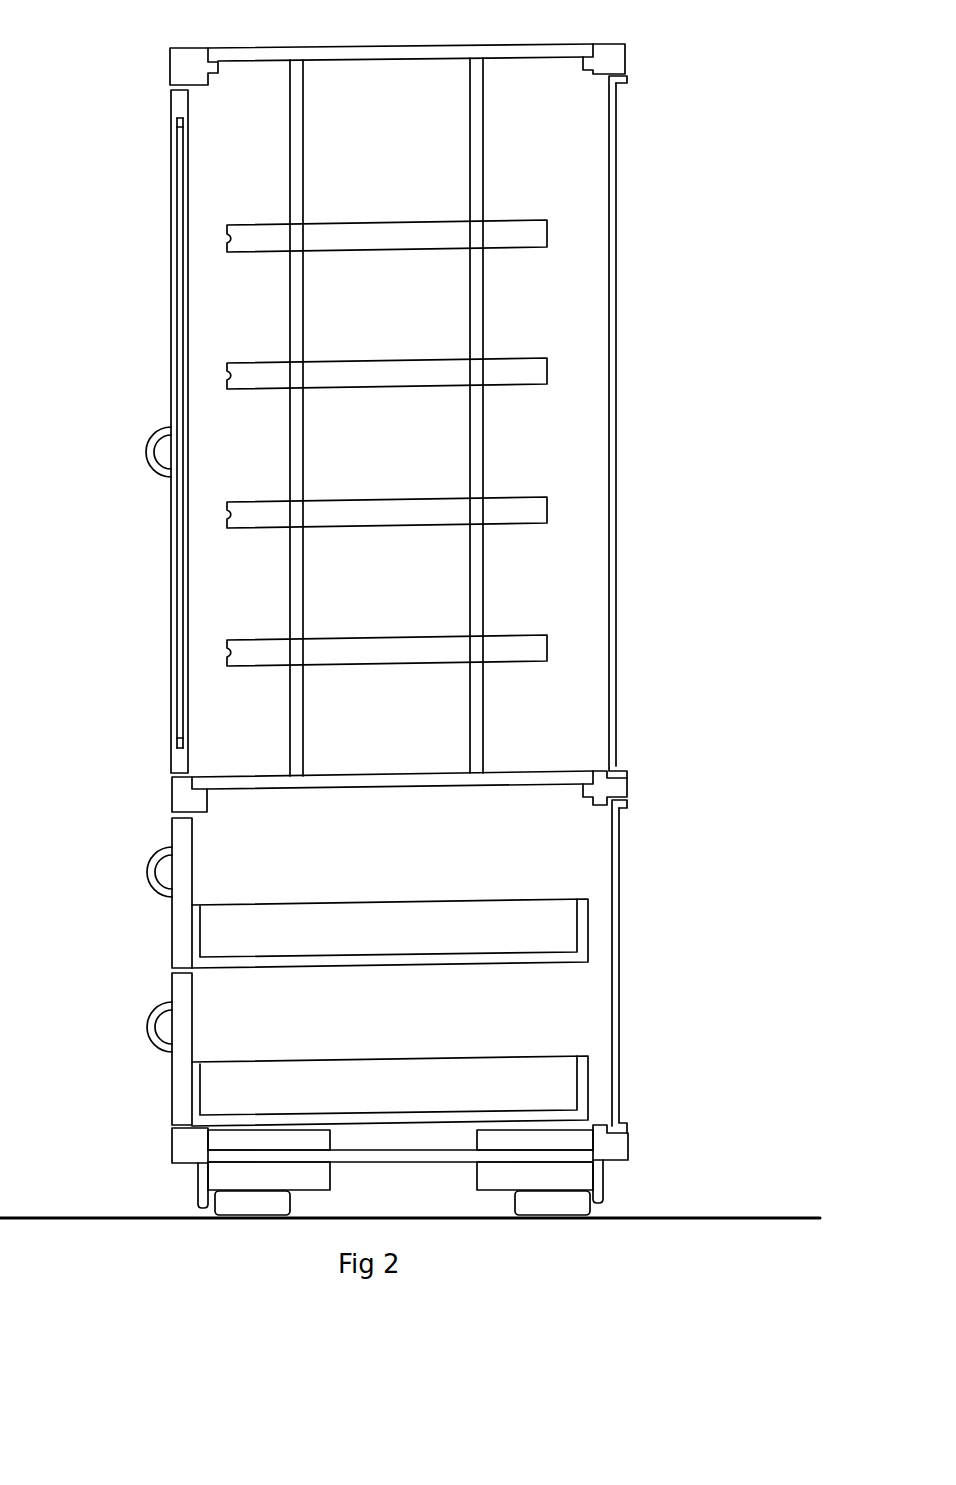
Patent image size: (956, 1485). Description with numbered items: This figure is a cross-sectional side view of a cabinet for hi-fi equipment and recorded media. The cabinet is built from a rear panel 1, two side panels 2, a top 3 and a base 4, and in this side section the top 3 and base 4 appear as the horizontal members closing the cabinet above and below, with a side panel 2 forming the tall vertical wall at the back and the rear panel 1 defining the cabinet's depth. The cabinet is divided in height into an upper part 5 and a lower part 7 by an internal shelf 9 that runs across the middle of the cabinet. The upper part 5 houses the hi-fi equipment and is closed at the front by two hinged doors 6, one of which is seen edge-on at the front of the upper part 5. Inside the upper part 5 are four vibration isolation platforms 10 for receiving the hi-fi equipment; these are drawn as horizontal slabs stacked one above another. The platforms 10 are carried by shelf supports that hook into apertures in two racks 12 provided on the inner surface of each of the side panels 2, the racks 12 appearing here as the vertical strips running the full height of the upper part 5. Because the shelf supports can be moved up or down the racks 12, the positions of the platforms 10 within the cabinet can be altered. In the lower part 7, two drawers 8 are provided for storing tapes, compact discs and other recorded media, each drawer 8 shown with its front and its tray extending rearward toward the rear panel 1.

The rear panel 1 is at (613, 463).
The side panels 2 is at (570, 582).
The top 3 is at (615, 55).
The base 4 is at (598, 1172).
The upper part 5 is at (610, 343).
The hinged doors 6 is at (175, 367).
The lower part 7 is at (612, 982).
The drawers 8 is at (182, 833).
The internal shelf 9 is at (262, 782).
The vibration isolation platforms 10 is at (283, 513).
The racks 12 is at (297, 188).